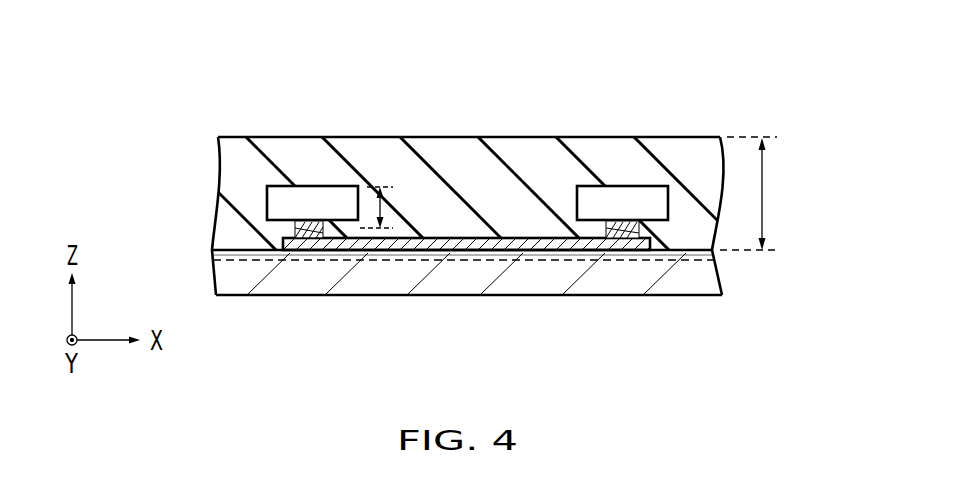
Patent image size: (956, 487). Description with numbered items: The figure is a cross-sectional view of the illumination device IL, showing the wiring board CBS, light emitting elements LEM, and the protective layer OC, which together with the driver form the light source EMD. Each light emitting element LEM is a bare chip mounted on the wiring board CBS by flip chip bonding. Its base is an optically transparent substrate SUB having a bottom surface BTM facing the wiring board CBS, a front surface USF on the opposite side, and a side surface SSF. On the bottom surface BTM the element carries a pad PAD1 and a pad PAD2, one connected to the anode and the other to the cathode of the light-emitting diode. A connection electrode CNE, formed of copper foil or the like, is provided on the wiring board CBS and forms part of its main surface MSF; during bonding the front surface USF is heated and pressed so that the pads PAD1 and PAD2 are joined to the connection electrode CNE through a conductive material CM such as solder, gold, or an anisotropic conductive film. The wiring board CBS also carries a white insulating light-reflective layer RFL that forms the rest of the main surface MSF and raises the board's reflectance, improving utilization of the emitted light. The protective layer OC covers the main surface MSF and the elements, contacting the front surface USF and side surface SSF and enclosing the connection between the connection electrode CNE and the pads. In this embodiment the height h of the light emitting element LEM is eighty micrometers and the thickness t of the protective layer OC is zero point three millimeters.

The light source EMD is at (210, 118).
The front surface USF is at (287, 140).
The substrate SUB is at (317, 200).
The light emitting element LEM is at (341, 184).
The height h is at (381, 207).
The illumination device IL is at (737, 113).
The protective layer OC is at (237, 163).
The side surface SSF is at (266, 206).
The bottom surface BTM is at (283, 239).
The thickness t is at (765, 191).
The pad PAD2 is at (303, 233).
The conductive material CM is at (317, 233).
The wiring board CBS is at (391, 299).
The main surface MSF is at (449, 226).
The connection electrode CNE is at (510, 256).
The pad PAD1 is at (621, 232).
The light-reflective layer RFL is at (705, 256).